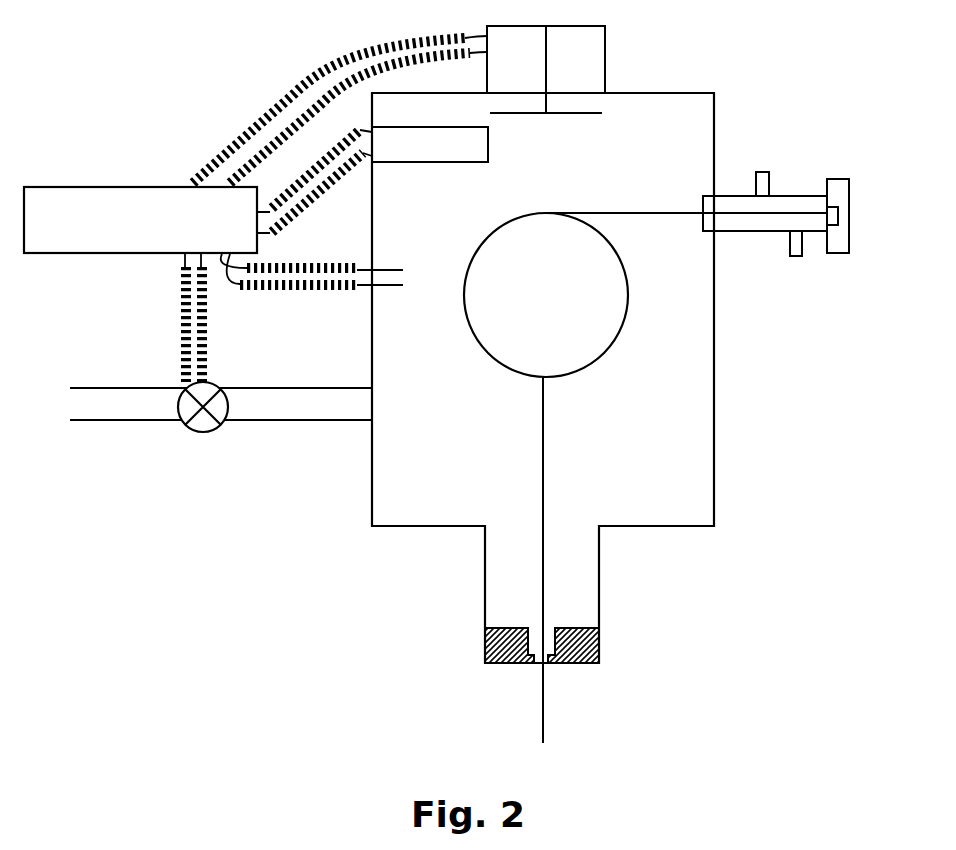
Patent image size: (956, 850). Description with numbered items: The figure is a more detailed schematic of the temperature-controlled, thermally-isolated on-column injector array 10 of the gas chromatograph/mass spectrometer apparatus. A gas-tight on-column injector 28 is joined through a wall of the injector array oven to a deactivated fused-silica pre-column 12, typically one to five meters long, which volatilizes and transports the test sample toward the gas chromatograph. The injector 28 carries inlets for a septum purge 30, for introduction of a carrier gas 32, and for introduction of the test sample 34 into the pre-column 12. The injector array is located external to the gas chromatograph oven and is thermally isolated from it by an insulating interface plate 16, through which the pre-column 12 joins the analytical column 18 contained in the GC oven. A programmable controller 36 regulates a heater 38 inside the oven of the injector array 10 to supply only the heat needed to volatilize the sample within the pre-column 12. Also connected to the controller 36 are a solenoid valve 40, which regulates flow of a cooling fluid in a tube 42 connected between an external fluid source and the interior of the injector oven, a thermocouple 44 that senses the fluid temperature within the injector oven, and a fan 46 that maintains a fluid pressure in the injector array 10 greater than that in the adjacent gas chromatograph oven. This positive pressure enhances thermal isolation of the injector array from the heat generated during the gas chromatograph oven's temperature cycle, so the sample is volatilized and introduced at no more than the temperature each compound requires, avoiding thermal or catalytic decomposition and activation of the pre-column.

The on-column injector array 10 is at (340, 615).
The pre-column 12 is at (643, 212).
The insulating interface plate 16 is at (575, 664).
The analytical column 18 is at (545, 717).
The gas-tight on-column injector 28 is at (848, 166).
The septum purge inlet 30 is at (796, 245).
The carrier gas inlet 32 is at (760, 190).
The test sample inlet 34 is at (838, 215).
The programmable controller 36 is at (121, 193).
The heater 38 is at (460, 163).
The solenoid valve 40 is at (190, 419).
The tube 42 is at (300, 390).
The thermocouple 44 is at (410, 277).
The fan 46 is at (590, 80).